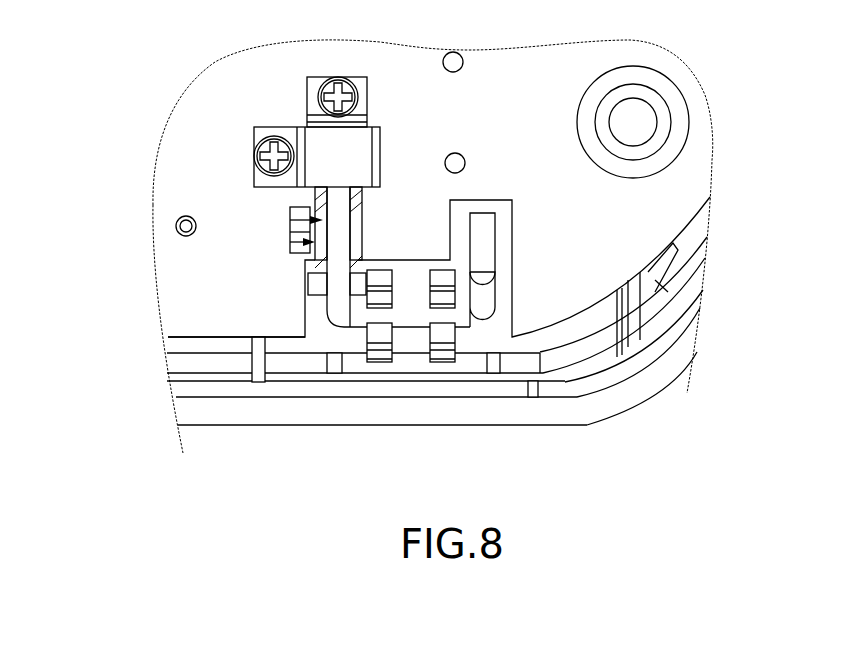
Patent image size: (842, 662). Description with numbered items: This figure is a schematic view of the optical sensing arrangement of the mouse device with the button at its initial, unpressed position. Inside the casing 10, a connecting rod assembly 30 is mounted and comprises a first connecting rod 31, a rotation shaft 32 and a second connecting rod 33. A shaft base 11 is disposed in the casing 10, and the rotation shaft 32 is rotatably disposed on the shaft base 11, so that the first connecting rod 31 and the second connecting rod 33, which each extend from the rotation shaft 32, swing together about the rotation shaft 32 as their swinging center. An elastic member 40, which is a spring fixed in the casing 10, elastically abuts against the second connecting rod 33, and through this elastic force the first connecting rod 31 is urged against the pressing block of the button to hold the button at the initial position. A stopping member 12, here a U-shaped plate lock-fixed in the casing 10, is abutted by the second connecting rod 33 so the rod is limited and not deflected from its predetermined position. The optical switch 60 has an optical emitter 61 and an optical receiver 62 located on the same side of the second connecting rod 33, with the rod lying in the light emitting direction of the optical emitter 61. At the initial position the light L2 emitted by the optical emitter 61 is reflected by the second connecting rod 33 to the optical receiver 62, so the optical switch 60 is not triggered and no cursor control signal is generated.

The casing 10 is at (297, 413).
The shaft base 11 is at (440, 363).
The stopping member 12 is at (365, 147).
The connecting rod assembly 30 is at (503, 284).
The first connecting rod 31 is at (483, 307).
The rotation shaft 32 is at (400, 320).
The second connecting rod 33 is at (335, 285).
The elastic member 40 is at (363, 203).
The optical switch 60 is at (181, 247).
The optical emitter 61 is at (290, 220).
The optical receiver 62 is at (290, 253).
The light L2 is at (293, 208).